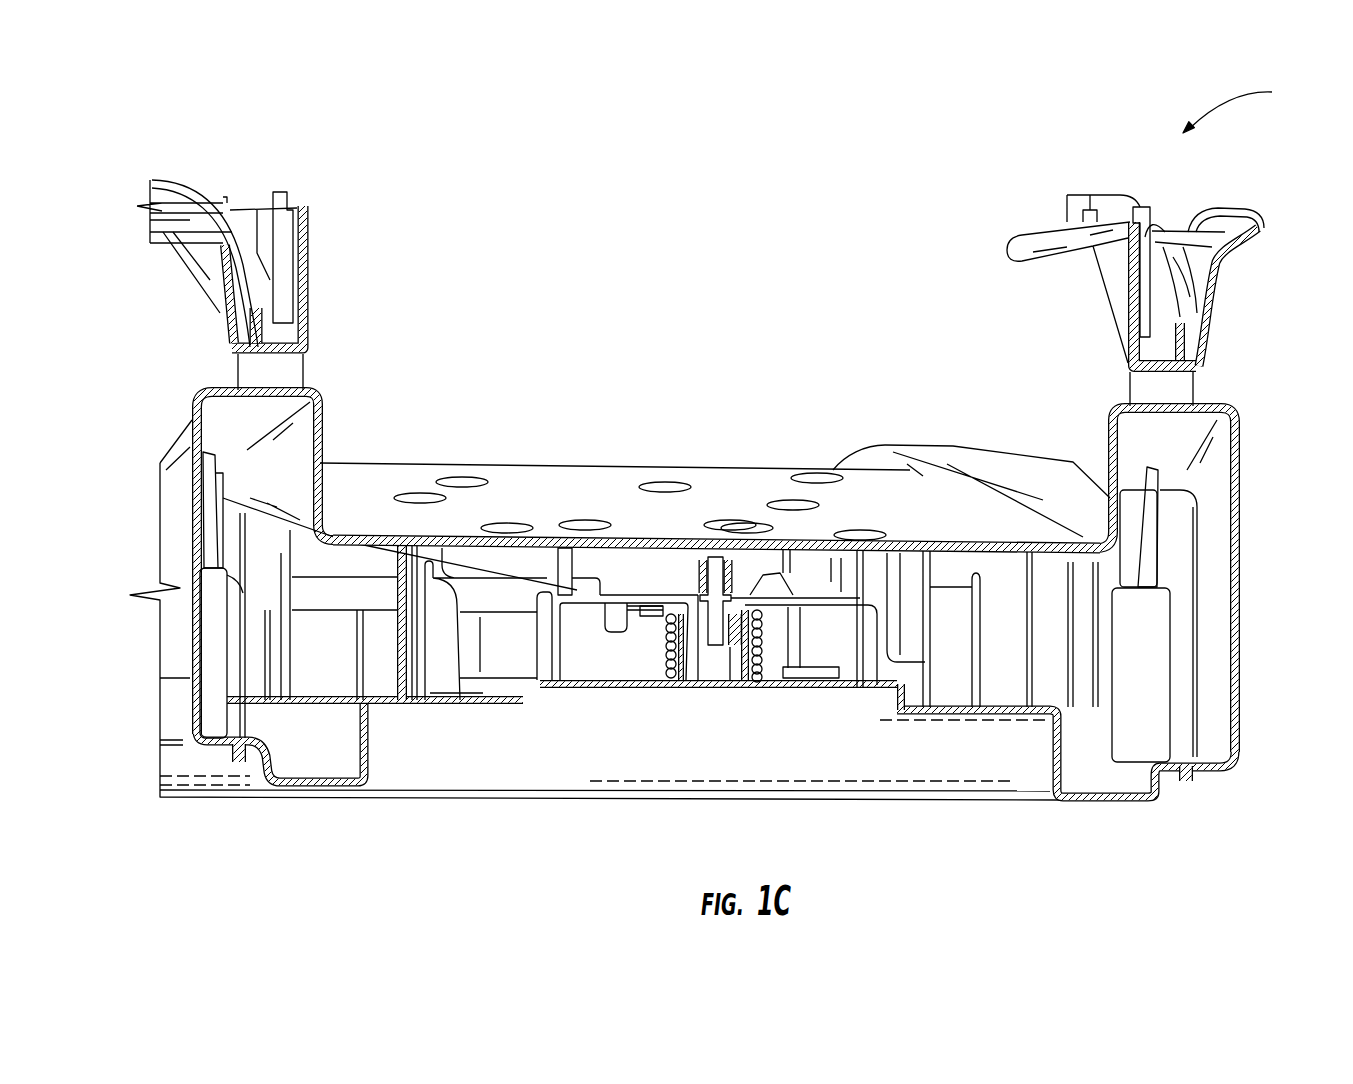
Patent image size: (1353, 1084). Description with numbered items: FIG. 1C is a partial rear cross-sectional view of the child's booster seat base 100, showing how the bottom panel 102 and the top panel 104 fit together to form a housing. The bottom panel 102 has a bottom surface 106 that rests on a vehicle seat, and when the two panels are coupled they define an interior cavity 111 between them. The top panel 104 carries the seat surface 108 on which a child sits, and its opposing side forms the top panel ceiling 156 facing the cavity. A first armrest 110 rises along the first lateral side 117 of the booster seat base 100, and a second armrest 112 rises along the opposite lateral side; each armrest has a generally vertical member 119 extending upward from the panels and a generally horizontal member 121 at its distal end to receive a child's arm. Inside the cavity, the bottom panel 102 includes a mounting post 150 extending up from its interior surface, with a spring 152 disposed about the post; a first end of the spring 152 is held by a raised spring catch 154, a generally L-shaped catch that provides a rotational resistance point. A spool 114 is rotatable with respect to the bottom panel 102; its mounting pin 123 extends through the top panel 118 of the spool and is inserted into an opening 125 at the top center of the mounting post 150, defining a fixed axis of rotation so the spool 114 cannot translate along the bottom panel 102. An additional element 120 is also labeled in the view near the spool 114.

The booster seat base 100 is at (1246, 109).
The bottom panel 102 is at (880, 720).
The top panel 104 is at (1005, 520).
The bottom surface 106 is at (560, 800).
The seat surface 108 is at (546, 485).
The first armrest 110 is at (1212, 316).
The interior cavity 111 is at (468, 650).
The second armrest 112 is at (228, 288).
The spool 114 is at (550, 647).
The first lateral side 117 is at (1240, 577).
The top panel of the spool 118 is at (318, 510).
The generally vertical member 119 is at (1187, 380).
The ramp 120 is at (790, 597).
The generally horizontal member 121 is at (1035, 242).
The mounting pin 123 is at (717, 565).
The opening 125 is at (718, 648).
The mounting post 150 is at (723, 668).
The spring 152 is at (661, 693).
The raised spring catch 154 is at (817, 668).
The top panel ceiling 156 is at (857, 553).